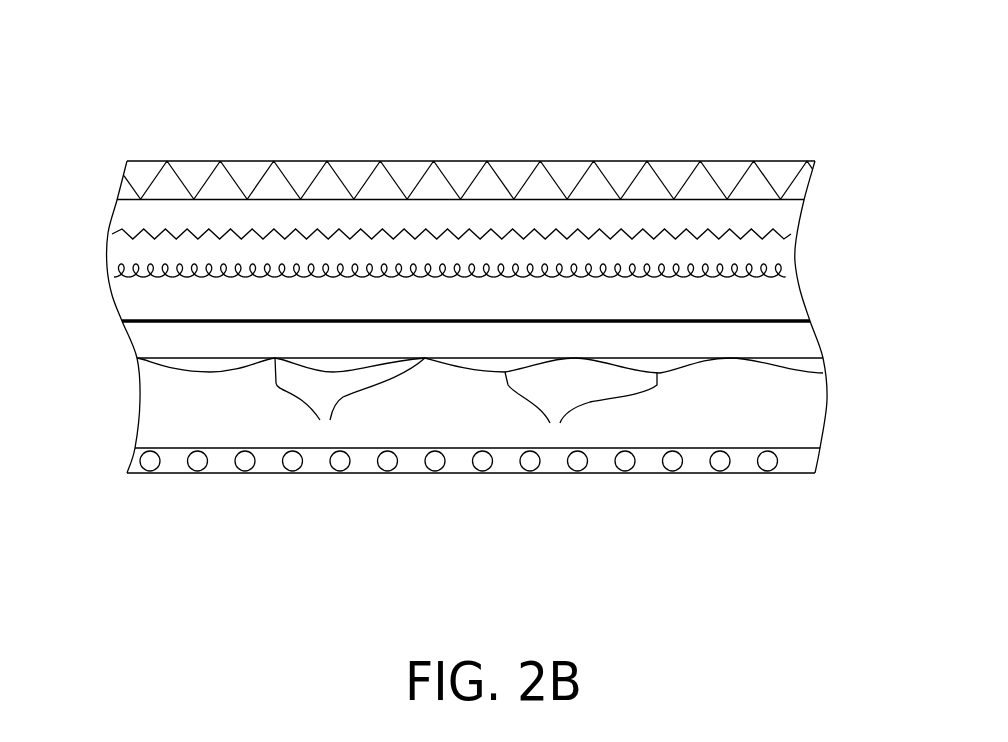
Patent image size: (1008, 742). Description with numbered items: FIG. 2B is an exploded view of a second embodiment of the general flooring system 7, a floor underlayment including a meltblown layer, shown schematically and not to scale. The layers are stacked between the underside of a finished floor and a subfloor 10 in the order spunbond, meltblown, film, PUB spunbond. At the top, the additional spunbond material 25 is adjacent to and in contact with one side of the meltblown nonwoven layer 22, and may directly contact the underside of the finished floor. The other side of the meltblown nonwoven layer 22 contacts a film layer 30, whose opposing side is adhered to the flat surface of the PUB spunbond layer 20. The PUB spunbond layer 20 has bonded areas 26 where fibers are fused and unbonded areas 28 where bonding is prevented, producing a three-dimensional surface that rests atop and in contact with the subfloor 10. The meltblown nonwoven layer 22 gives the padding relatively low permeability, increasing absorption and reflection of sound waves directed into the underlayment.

The laminated composite article 7 is at (461, 265).
The subfloor 10 is at (812, 463).
The PUB spunbond layer 20 is at (518, 406).
The meltblown nonwoven layer 22 is at (788, 268).
The spunbond material 25 is at (110, 233).
The bonded areas 26 is at (350, 403).
The unbonded areas 28 is at (581, 413).
The film layer 30 is at (121, 318).